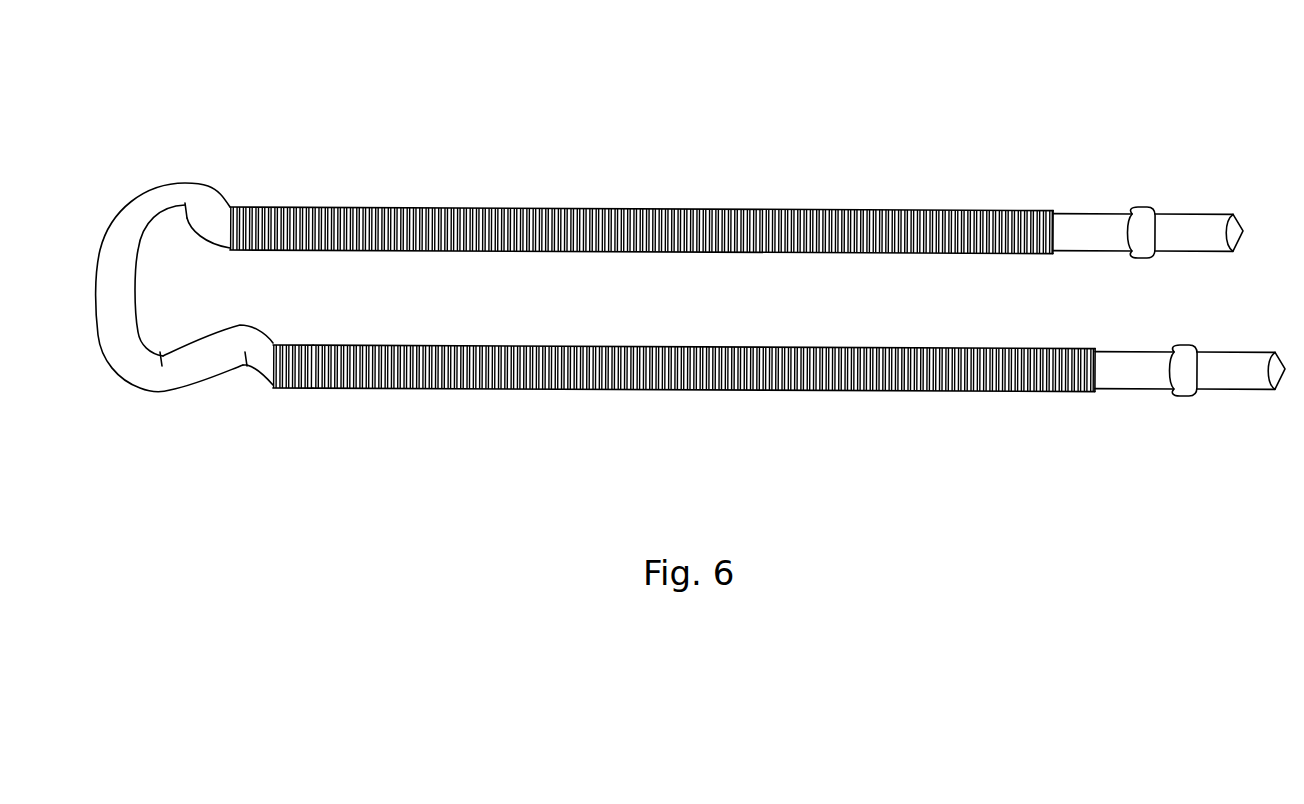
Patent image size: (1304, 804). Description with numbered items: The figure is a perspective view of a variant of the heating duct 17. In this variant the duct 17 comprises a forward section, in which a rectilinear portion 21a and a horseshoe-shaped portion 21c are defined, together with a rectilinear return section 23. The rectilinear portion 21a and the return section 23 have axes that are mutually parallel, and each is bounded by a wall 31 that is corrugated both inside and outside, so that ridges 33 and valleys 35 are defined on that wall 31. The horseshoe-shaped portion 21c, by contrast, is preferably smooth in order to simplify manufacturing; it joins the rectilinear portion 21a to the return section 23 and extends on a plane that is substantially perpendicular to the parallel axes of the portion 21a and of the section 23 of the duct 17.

The heating duct 17 is at (690, 272).
The rectilinear portion 21a is at (737, 185).
The horseshoe-shaped portion 21c is at (177, 399).
The rectilinear return section 23 is at (764, 413).
The wall 31 is at (271, 386).
The ridges 33 is at (342, 207).
The valleys 35 is at (406, 207).